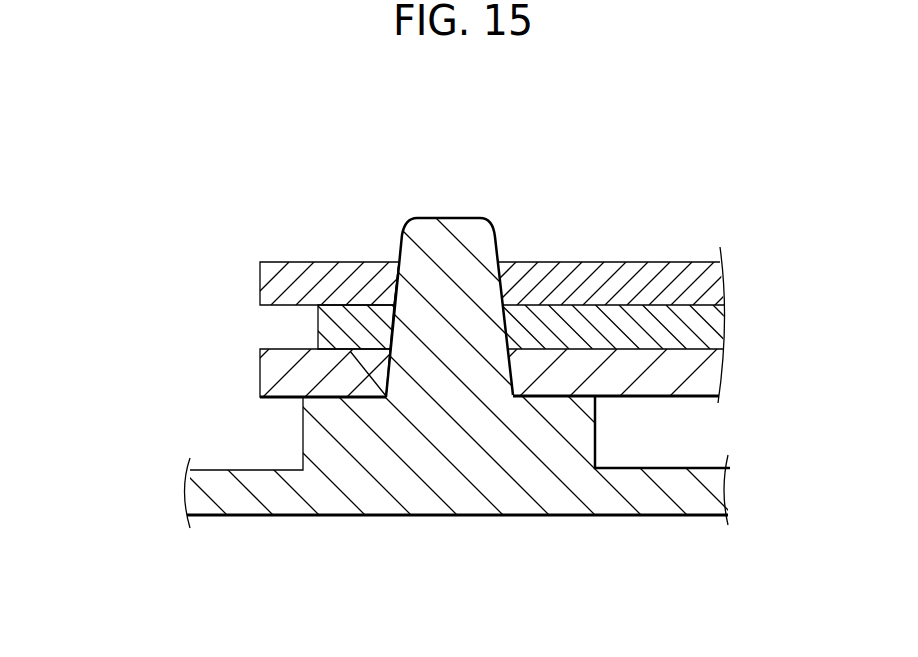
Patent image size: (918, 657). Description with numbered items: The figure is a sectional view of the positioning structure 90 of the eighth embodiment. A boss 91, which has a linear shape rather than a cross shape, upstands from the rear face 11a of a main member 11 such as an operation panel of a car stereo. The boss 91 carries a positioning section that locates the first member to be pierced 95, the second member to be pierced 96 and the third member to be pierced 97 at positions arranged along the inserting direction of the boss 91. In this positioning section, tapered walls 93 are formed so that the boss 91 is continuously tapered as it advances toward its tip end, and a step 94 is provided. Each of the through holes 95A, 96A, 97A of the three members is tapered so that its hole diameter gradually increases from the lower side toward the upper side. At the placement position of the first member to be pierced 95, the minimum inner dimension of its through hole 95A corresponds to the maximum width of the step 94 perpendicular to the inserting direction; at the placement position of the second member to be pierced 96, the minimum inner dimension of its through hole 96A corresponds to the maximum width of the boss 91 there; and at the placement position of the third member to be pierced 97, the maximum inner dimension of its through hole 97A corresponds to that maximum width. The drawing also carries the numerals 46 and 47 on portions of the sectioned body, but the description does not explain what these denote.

The main member 11 is at (280, 499).
The rear face 11a is at (712, 462).
The first side portion of protrusion 46 is at (519, 325).
The second side portion of protrusion 47 is at (500, 340).
The positioning structure 90 is at (515, 217).
The boss 91 is at (471, 211).
The tapered wall 93 is at (383, 262).
The step 94 is at (577, 395).
The first member to be pierced 95 is at (277, 376).
The second member to be pierced 96 is at (327, 332).
The third member to be pierced 97 is at (270, 286).
The through hole 95A is at (527, 368).
The through hole 96A is at (527, 322).
The through hole 97A is at (509, 276).